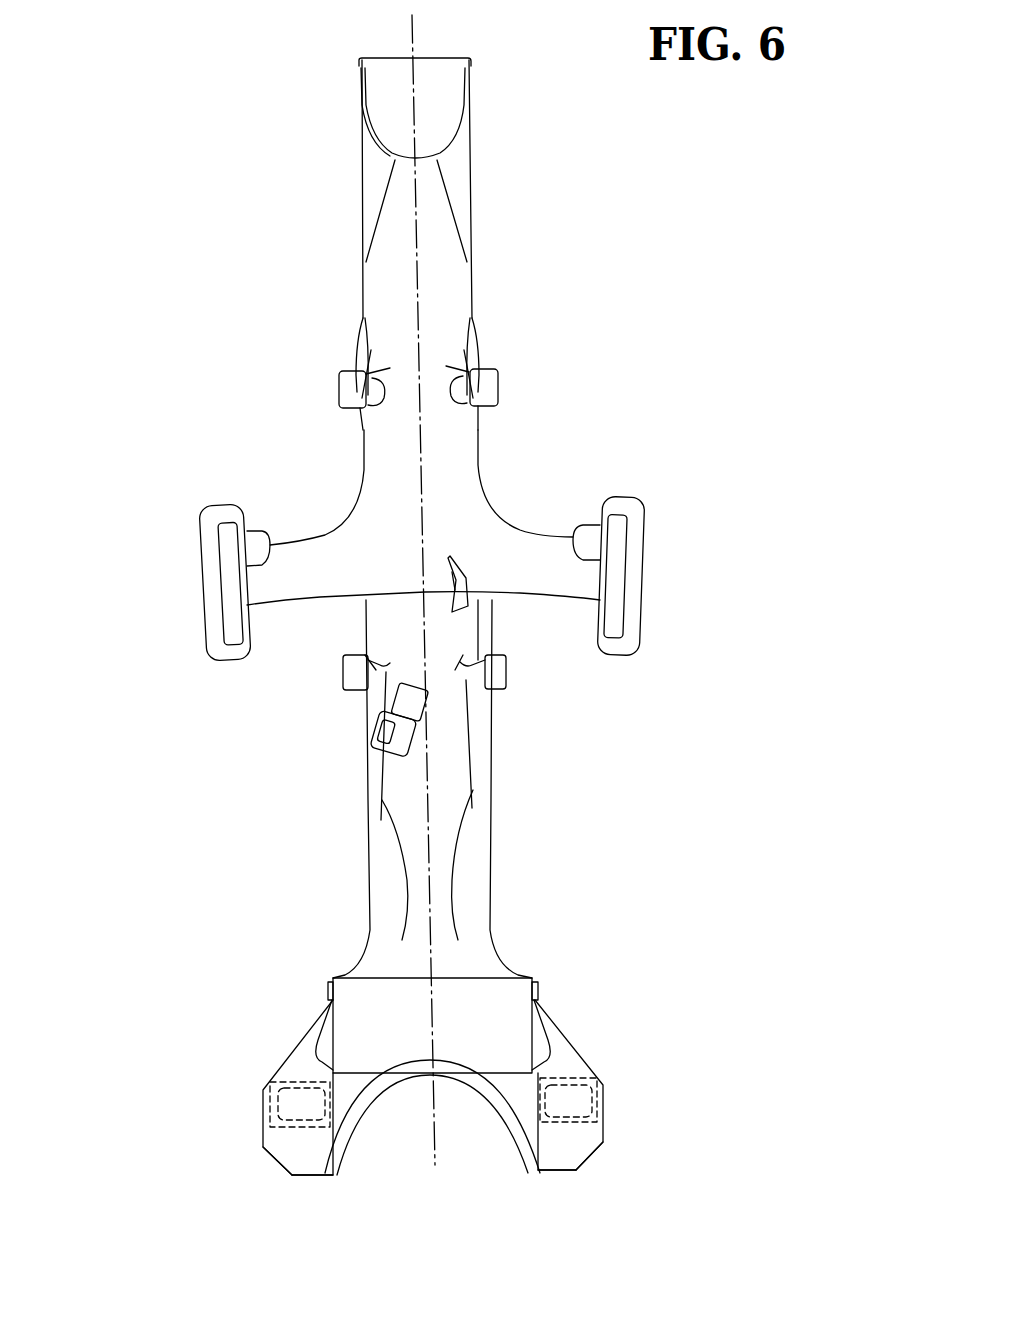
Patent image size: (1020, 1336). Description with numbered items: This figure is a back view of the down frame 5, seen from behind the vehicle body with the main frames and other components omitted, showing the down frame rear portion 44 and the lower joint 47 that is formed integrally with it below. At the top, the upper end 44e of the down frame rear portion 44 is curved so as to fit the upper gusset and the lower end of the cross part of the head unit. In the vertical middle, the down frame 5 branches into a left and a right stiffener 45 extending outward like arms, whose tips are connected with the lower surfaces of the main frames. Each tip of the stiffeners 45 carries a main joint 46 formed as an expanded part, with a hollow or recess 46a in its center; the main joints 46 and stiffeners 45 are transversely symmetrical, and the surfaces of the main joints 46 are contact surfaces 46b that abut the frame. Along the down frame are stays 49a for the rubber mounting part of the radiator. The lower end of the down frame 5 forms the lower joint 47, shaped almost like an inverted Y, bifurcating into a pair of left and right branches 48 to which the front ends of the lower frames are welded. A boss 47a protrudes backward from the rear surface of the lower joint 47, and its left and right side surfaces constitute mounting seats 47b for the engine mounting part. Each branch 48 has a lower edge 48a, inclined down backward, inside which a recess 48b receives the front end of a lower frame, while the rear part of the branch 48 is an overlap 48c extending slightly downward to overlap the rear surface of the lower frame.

The down frame 5 is at (346, 199).
The down frame rear portion 44 is at (452, 518).
The upper end 44e is at (473, 112).
The stiffener 45 is at (318, 546).
The main joint 46 is at (205, 576).
The recess 46a is at (228, 520).
The contact surface 46b is at (232, 630).
The lower joint 47 is at (444, 979).
The boss 47a is at (480, 992).
The mounting seat 47b is at (316, 1040).
The branch 48 is at (265, 1102).
The lower edge 48a is at (290, 1166).
The recess 48b is at (265, 1132).
The overlap 48c is at (318, 1180).
The stay 49a is at (338, 390).